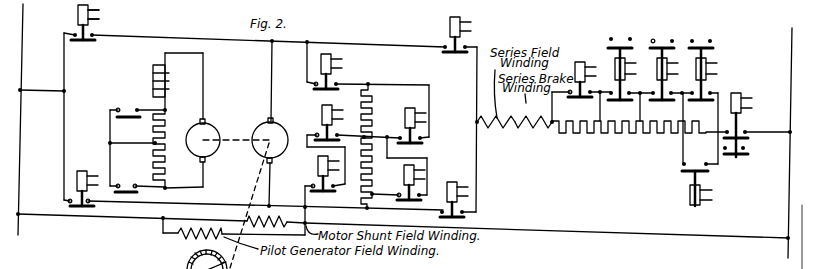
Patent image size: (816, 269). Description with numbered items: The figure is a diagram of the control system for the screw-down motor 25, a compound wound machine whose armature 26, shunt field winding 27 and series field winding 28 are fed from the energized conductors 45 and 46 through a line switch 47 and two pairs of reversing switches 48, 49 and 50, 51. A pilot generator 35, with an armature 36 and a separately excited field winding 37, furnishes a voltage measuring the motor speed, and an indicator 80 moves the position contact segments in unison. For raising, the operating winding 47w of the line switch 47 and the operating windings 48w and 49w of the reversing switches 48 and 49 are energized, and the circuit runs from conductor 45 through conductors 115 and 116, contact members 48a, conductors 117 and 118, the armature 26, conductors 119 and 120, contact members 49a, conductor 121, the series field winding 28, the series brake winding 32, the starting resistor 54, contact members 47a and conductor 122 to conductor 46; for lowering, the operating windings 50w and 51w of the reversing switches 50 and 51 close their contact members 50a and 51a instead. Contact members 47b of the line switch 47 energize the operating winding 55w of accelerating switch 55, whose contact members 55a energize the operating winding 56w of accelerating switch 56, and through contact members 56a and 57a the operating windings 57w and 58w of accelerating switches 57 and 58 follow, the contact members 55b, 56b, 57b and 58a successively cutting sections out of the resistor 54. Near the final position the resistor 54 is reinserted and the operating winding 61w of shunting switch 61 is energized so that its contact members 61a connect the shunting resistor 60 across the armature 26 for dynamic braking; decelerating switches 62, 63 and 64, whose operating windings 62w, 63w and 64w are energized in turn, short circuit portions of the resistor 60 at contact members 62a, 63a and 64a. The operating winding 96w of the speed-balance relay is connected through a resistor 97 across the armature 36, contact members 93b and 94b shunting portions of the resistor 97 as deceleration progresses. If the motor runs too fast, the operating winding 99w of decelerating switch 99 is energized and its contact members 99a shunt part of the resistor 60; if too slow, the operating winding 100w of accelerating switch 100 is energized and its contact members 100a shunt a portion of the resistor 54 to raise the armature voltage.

The energized conductor 45 is at (20, 182).
The energized conductor 46 is at (788, 212).
The conductor 115 is at (39, 89).
The conductor 116 is at (67, 74).
The conductor 117 is at (193, 36).
The conductor 118 is at (272, 76).
The conductor 119 is at (270, 190).
The conductor 120 is at (372, 210).
The conductor 121 is at (478, 175).
The conductor 122 is at (767, 124).
The reversing switch 48 is at (129, 17).
The contact members 48a is at (75, 33).
The operating winding 48w is at (96, 19).
The pilot generator 35 is at (196, 112).
The armature 36 is at (207, 121).
The screw-down motor 25 is at (262, 112).
The armature 26 is at (274, 121).
The operating winding 96w is at (167, 80).
The contact members 94b is at (128, 108).
The resistor 97 is at (166, 150).
The contact members 93b is at (127, 184).
The reversing switch 50 is at (103, 162).
The operating winding 50w is at (76, 172).
The relay contacts 50a is at (90, 203).
The shunt field winding 27 is at (290, 222).
The separately excited field winding 37 is at (182, 240).
The indicator 80 is at (228, 259).
The shunting switch 61 is at (365, 73).
The operating winding 61w is at (333, 56).
The contact members 61a is at (337, 83).
The shunting resistor 60 is at (373, 118).
The decelerating switch 64 is at (352, 105).
The operating winding 64w is at (322, 112).
The contact members 64a is at (337, 134).
The decelerating switch 99 is at (314, 180).
The operating winding 99w is at (320, 166).
The contact members 99a is at (335, 190).
The decelerating switch 62 is at (454, 119).
The operating winding 62w is at (405, 113).
The relay contacts 62a is at (423, 142).
The decelerating switch 63 is at (446, 171).
The operating winding 63w is at (404, 175).
The contact members 63a is at (398, 199).
The reversing switch 49 is at (469, 183).
The operating winding 49w is at (450, 184).
The contact members 49a is at (443, 211).
The reversing switch 51 is at (504, 36).
The operating winding 51w is at (462, 27).
The relay contacts 51a is at (445, 46).
The series field winding 28 is at (496, 134).
The series brake winding 32 is at (534, 134).
The starting resistor 54 is at (612, 137).
The accelerating switch 58 is at (588, 35).
The operating winding 58w is at (577, 62).
The contact members 58a is at (591, 91).
The accelerating switch 57 is at (630, 29).
The relay contacts 57a is at (625, 40).
The operating winding 57w is at (626, 67).
The contact members 57b is at (627, 92).
The accelerating switch 56 is at (672, 29).
The relay contacts 56a is at (667, 40).
The operating winding 56w is at (668, 68).
The contact members 56b is at (670, 92).
The accelerating switch 55 is at (713, 29).
The contact members 55a is at (708, 40).
The operating winding 55w is at (708, 67).
The contact members 55b is at (711, 92).
The line switch 47 is at (768, 88).
The operating winding 47w is at (742, 104).
The contact members 47a is at (741, 131).
The contact members 47b is at (745, 148).
The accelerating switch 100 is at (674, 194).
The contact members 100a is at (697, 162).
The operating winding 100w is at (702, 192).